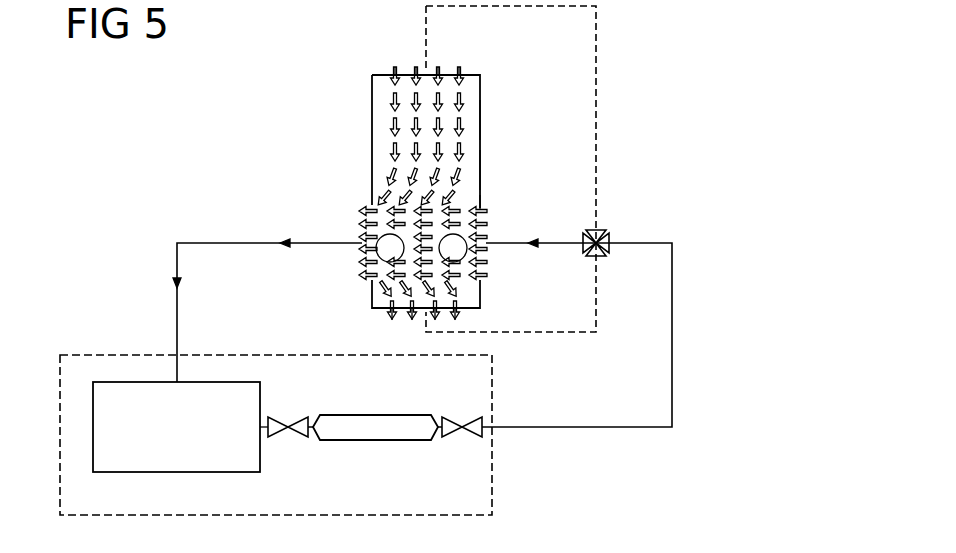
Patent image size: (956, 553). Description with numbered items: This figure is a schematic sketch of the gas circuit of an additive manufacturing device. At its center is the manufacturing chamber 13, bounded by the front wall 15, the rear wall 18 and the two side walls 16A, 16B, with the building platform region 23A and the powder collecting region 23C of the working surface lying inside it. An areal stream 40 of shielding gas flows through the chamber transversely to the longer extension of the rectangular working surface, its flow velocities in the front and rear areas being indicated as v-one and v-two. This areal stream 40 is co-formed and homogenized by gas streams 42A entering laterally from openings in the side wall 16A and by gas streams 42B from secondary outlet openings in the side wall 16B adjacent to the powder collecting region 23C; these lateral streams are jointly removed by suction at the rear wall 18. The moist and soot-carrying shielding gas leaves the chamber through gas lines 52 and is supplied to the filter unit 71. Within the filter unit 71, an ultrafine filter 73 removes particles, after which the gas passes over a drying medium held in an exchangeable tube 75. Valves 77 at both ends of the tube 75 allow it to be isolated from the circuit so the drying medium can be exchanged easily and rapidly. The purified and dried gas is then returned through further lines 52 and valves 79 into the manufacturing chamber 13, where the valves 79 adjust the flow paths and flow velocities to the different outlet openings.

The manufacturing chamber 13 is at (480, 168).
The front wall 15 is at (481, 82).
The side wall 16A is at (373, 306).
The side wall 16B is at (472, 75).
The rear wall 18 is at (372, 131).
The building platform region 23A is at (494, 207).
The powder collecting region 23C is at (482, 119).
The areal stream of shielding gas 40 is at (412, 260).
The gas streams 42A is at (466, 296).
The gas streams 42B is at (410, 73).
The gas lines 52 is at (598, 97).
The filter unit 71 is at (494, 486).
The ultrafine filter 73 is at (262, 465).
The tube 75 is at (378, 442).
The valves 77 is at (292, 416).
The valves 79 is at (604, 250).